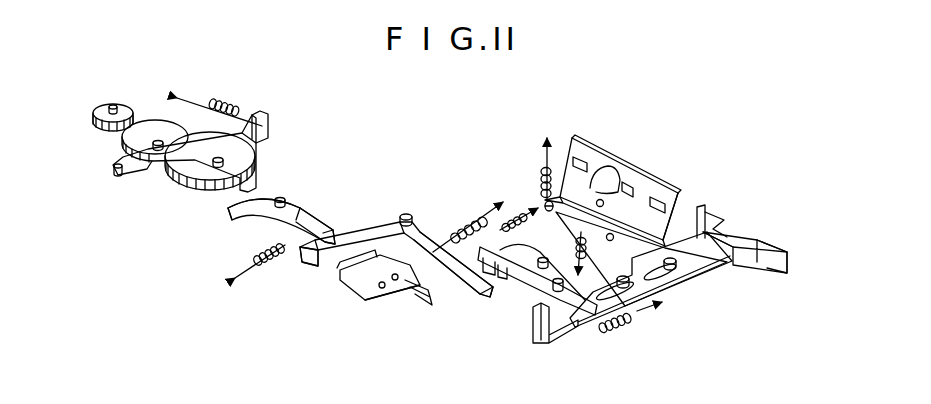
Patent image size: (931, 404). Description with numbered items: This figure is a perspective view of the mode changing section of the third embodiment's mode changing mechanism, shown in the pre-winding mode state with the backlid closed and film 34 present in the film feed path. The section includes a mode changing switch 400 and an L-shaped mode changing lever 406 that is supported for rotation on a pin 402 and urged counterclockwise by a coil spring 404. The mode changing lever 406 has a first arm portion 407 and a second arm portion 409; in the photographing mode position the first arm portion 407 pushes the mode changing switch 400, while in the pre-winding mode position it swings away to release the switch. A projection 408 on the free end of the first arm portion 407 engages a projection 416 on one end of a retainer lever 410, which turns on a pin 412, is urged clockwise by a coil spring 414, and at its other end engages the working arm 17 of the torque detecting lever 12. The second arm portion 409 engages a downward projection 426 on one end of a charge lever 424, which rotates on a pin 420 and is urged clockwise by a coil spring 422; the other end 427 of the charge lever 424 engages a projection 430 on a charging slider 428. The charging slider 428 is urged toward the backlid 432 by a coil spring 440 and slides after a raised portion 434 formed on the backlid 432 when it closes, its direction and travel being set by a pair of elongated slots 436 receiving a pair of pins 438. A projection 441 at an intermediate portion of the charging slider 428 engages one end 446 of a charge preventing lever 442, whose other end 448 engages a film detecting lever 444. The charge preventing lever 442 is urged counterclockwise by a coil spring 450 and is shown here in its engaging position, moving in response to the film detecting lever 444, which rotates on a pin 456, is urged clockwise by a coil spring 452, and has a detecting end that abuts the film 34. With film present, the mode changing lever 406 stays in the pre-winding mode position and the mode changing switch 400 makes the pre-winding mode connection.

The torque detecting lever 12 is at (197, 183).
The working arm 17 is at (262, 185).
The film 34 is at (640, 177).
The mode changing switch 400 is at (370, 290).
The pin 402 is at (407, 214).
The coil spring 404 is at (457, 237).
The mode changing lever 406 is at (447, 287).
The first arm portion 407 is at (370, 237).
The projection 408 is at (302, 247).
The second arm portion 409 is at (477, 289).
The retainer lever 410 is at (252, 225).
The pin 412 is at (285, 200).
The coil spring 414 is at (240, 255).
The projection 416 is at (323, 230).
The pin 420 is at (466, 222).
The coil spring 422 is at (510, 222).
The charge lever 424 is at (528, 282).
The downward projection 426 is at (503, 307).
The other end of charge lever 427 is at (590, 333).
The charging slider 428 is at (710, 209).
The projection 430 is at (542, 342).
The backlid 432 is at (783, 255).
The raised portion 434 is at (740, 228).
The elongated slots 436 is at (677, 280).
The pins 438 is at (680, 262).
The coil spring 440 is at (613, 322).
The projection 441 is at (680, 207).
The charge preventing lever 442 is at (653, 178).
The film detecting lever 444 is at (607, 170).
The one end of charge preventing lever 446 is at (702, 210).
The other end of charge preventing lever 448 is at (558, 197).
The coil spring 450 is at (648, 305).
The coil spring 452 is at (540, 177).
The pin 456 is at (627, 187).